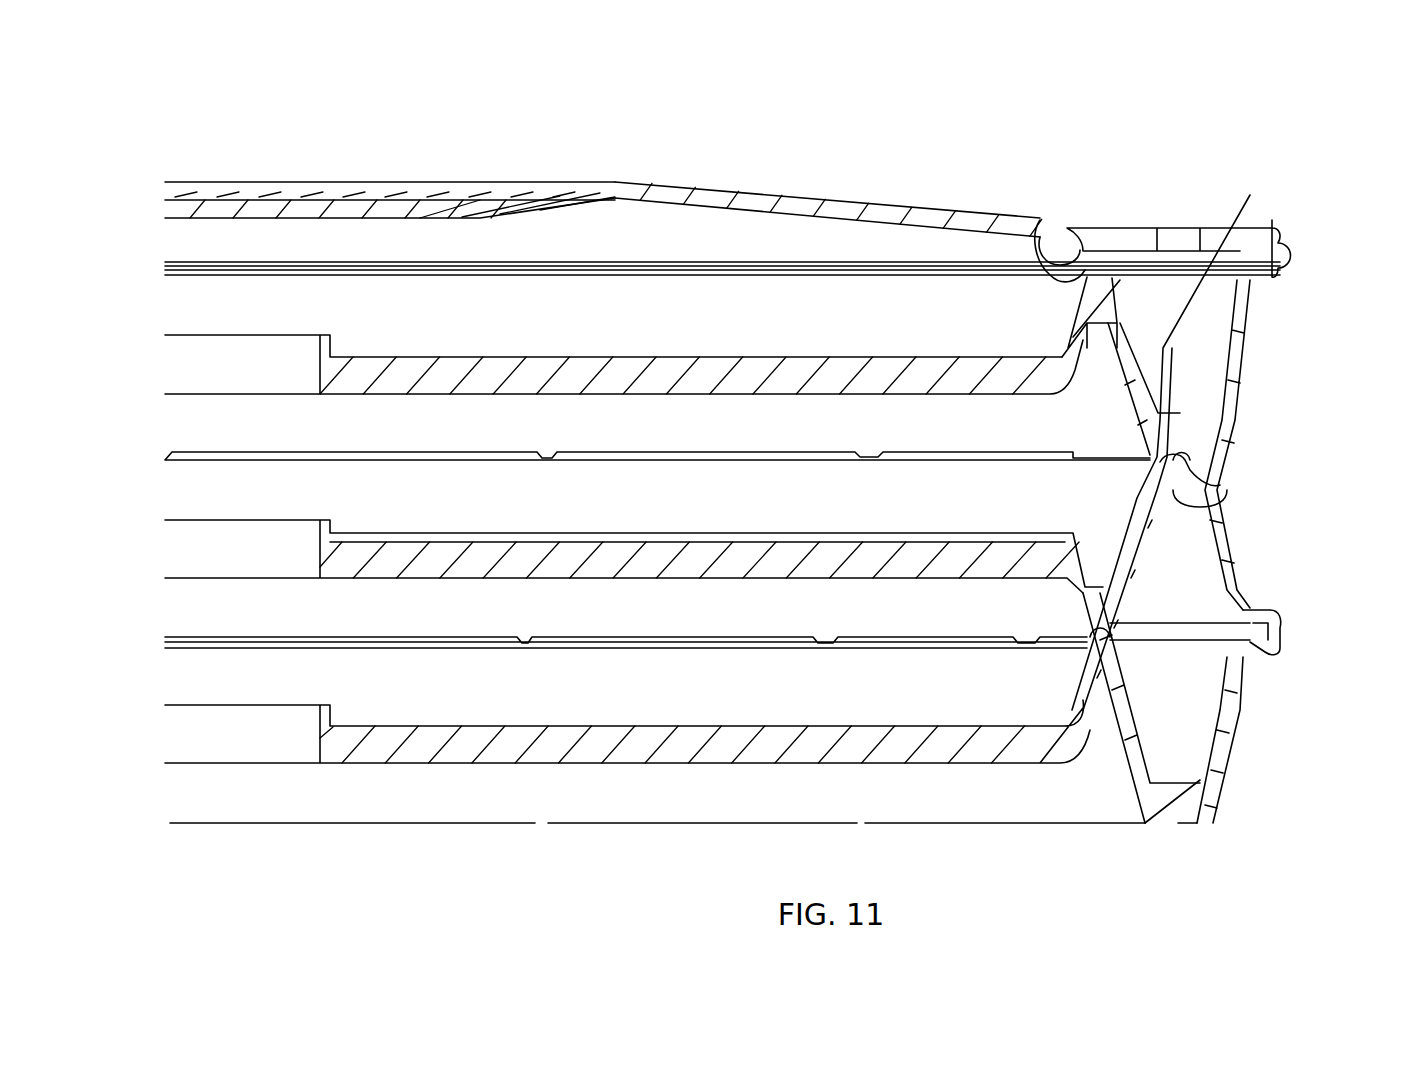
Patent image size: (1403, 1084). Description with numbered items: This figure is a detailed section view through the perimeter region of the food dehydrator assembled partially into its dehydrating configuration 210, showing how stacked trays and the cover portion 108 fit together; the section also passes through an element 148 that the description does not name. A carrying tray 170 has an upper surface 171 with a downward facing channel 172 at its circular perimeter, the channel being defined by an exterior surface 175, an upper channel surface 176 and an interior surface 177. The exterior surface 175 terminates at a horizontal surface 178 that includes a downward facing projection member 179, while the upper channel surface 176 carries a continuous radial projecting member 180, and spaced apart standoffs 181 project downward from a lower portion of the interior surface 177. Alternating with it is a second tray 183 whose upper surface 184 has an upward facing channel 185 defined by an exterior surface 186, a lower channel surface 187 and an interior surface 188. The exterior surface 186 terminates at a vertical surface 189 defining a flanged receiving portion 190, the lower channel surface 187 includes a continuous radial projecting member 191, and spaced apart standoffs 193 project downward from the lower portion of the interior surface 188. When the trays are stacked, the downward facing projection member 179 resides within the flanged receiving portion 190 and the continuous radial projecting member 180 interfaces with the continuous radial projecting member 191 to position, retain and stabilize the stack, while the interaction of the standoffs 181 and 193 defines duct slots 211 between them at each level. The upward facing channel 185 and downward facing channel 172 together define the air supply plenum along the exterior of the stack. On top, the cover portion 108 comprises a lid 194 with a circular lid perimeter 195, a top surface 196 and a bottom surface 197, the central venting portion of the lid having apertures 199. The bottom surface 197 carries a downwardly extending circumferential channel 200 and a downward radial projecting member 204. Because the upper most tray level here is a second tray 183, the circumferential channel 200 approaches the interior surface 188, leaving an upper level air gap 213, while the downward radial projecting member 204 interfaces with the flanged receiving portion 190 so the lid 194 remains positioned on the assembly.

The cover portion 108 is at (715, 187).
The braid layer 148 is at (297, 181).
The apertures 199 is at (450, 180).
The duct slots 211 is at (483, 453).
The bottom surface 197 is at (660, 207).
The top surface 196 is at (808, 195).
The upper surface 184 is at (820, 355).
The lid 194 is at (955, 208).
The upper level air gap 213 is at (1043, 237).
The downwardly extending circumferential channel 200 is at (1102, 262).
The interior surface 188 is at (1075, 348).
The standoffs 193 is at (1093, 452).
The downward radial projecting member 204 is at (1275, 217).
The circular lid perimeter 195 is at (1288, 245).
The vertical surface 189 is at (1290, 265).
The flanged receiving portion 190 is at (1257, 277).
The exterior surface 186 is at (1238, 335).
The second tray 183 is at (1240, 348).
The upward facing channel 185 is at (1180, 375).
The lower channel surface 187 is at (1173, 405).
The continuous radial projecting member 191 is at (1190, 455).
The continuous radial projecting member 180 is at (1215, 478).
The upper channel surface 176 is at (1220, 500).
The interior surface 177 is at (1137, 533).
The carrying tray 170 is at (1237, 545).
The exterior surface 175 is at (1237, 563).
The downward facing channel 172 is at (1190, 588).
The horizontal surface 178 is at (1265, 608).
The downward facing projection member 179 is at (1282, 630).
The upper surface 171 is at (898, 533).
The standoffs 181 is at (1017, 640).
The dehydrating configuration 210 is at (1220, 770).